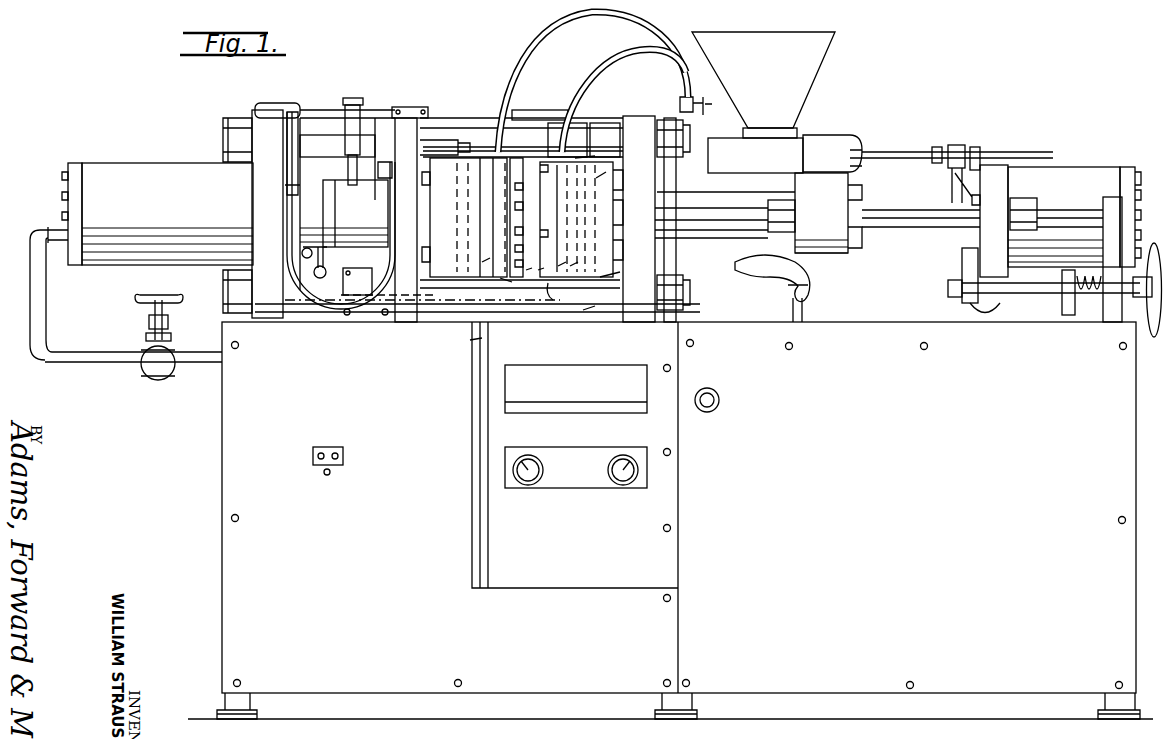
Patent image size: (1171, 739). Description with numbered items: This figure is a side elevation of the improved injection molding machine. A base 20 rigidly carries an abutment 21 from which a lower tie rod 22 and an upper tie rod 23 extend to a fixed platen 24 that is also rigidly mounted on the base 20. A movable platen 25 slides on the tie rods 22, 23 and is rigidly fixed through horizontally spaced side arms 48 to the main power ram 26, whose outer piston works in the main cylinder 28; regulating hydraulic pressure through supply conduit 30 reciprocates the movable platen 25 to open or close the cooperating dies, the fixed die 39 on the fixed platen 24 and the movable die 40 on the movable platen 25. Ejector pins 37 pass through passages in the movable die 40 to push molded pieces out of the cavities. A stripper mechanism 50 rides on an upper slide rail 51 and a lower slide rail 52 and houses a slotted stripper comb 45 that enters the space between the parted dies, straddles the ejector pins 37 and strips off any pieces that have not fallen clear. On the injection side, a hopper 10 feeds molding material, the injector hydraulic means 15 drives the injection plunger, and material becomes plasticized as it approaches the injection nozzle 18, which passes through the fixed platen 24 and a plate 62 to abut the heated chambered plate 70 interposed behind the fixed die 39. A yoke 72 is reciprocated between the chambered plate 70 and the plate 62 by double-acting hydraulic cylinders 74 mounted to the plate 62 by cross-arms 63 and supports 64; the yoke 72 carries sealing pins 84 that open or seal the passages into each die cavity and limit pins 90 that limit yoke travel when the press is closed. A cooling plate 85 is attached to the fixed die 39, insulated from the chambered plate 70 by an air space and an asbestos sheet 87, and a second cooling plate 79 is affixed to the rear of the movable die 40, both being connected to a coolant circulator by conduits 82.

The hopper 10 is at (820, 62).
The injector hydraulic means 15 is at (1078, 166).
The injection nozzle 18 is at (608, 218).
The base 20 is at (222, 448).
The abutment 21 is at (262, 116).
The lower tie rod 22 is at (690, 290).
The upper tie rod 23 is at (700, 135).
The fixed platen 24 is at (640, 117).
The movable platen 25 is at (415, 120).
The main power ram 26 is at (305, 200).
The main cylinder 28 is at (185, 170).
The supply conduit 30 is at (108, 365).
The ejector pins 37 is at (525, 278).
The fixed die 39 is at (553, 283).
The movable die 40 is at (507, 278).
The stripper comb 45 is at (510, 215).
The side arms 48 is at (364, 219).
The stripper mechanism 50 is at (577, 100).
The upper slide rail 51 is at (543, 113).
The lower slide rail 52 is at (483, 318).
The plate 62 is at (615, 276).
The cross-arms 63 is at (598, 116).
The supports 64 is at (595, 156).
The chambered plate 70 is at (583, 310).
The yoke 72 is at (596, 178).
The cylinders 74 is at (548, 143).
The second cooling plate 79 is at (430, 348).
The conduits 82 is at (638, 48).
The sealing pins 84 is at (540, 190).
The cooling plate 85 is at (562, 283).
The asbestos sheet 87 is at (575, 273).
The limit pins 90 is at (535, 283).